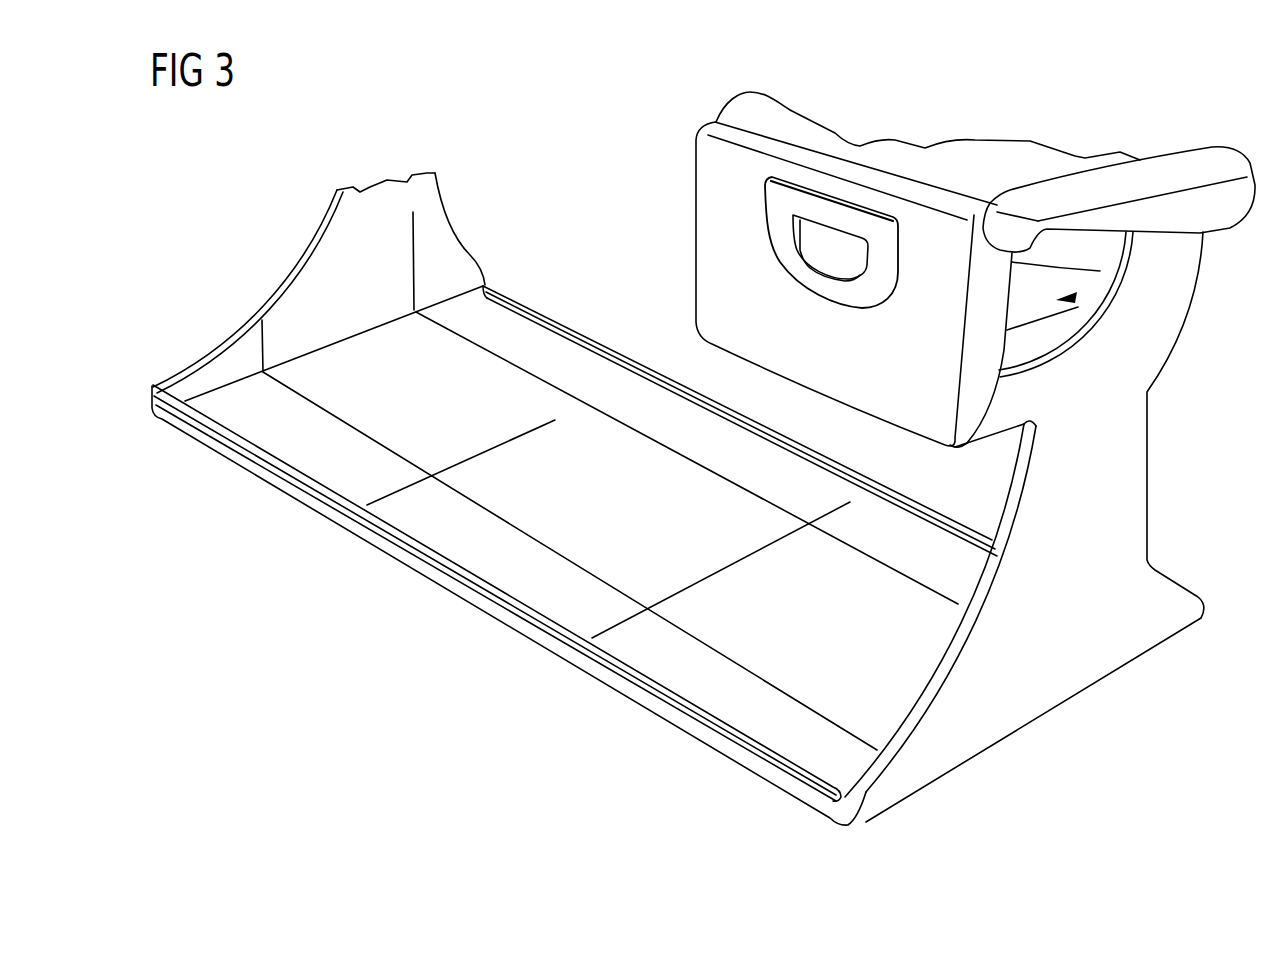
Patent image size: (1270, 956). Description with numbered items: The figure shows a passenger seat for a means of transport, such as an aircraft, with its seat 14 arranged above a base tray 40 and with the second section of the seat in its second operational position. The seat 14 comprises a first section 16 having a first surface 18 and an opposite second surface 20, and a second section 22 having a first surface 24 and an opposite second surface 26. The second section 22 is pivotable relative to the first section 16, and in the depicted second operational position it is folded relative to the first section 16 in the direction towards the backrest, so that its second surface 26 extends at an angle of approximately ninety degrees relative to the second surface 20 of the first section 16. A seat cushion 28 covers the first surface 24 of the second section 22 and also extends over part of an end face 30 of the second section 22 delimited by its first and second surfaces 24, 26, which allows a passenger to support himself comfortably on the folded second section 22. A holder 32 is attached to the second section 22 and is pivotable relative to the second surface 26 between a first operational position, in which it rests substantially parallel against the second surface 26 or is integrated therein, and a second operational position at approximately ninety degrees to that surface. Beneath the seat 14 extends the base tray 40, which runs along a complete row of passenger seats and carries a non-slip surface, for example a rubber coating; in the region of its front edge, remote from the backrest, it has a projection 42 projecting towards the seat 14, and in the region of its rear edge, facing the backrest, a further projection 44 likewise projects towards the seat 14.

The seat 14 is at (1077, 296).
The first section 16 is at (1088, 304).
The first surface 18 is at (1055, 274).
The second surface 20 is at (993, 433).
The second section 22 is at (1009, 273).
The first surface 24 is at (1012, 312).
The second surface 26 is at (846, 267).
The seat cushion 28 is at (767, 113).
The end face 30 is at (870, 160).
The holder 32 is at (823, 287).
The base tray 40 is at (670, 663).
The projection 42 is at (533, 612).
The projection 44 is at (950, 523).